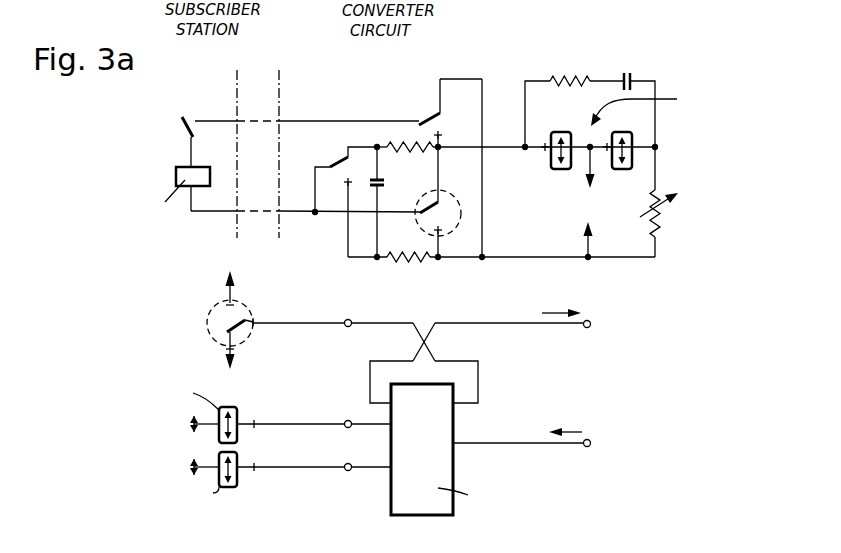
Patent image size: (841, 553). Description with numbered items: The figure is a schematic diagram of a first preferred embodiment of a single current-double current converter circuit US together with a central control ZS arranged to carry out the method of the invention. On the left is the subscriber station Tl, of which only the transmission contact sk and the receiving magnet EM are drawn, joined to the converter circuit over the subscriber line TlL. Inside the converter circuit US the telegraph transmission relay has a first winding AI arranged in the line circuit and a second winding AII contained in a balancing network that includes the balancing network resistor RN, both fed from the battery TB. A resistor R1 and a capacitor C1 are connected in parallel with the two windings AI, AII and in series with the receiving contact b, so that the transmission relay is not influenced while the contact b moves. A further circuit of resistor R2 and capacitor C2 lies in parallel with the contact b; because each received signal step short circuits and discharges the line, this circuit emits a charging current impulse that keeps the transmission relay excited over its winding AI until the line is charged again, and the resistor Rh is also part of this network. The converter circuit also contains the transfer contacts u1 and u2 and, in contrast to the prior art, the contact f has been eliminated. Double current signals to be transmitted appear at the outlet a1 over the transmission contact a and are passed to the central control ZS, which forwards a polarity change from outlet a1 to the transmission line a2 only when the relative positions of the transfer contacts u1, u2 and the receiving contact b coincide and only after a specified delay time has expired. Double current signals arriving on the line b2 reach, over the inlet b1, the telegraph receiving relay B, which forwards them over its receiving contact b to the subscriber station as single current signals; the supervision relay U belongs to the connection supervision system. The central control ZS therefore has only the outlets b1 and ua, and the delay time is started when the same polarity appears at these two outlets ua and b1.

The subscriber station Tl is at (217, 142).
The subscriber line TlL is at (261, 142).
The converter circuit US is at (427, 154).
The transmission contact sk is at (175, 142).
The receiving magnet EM is at (148, 205).
The transfer contact u1 is at (425, 108).
The transfer contact u2 is at (345, 176).
The capacitor C2 is at (370, 203).
The resistor R2 is at (405, 161).
The resistor Rh is at (415, 247).
The receiving contact b is at (450, 195).
The resistor R1 is at (574, 97).
The capacitor C1 is at (639, 97).
The first winding of transmission relay AI is at (556, 138).
The second winding of transmission relay AII is at (691, 131).
The battery TB is at (611, 203).
The balancing network resistor RN is at (665, 202).
The transmission contact a is at (244, 323).
The outlet a1 is at (333, 311).
The transmission line a2 is at (527, 324).
The central control ZS is at (471, 450).
The inlet b1 is at (314, 412).
The outlet ua is at (314, 458).
The line b2 is at (536, 442).
The telegraph receiving relay B is at (178, 410).
The supervision relay U is at (177, 486).